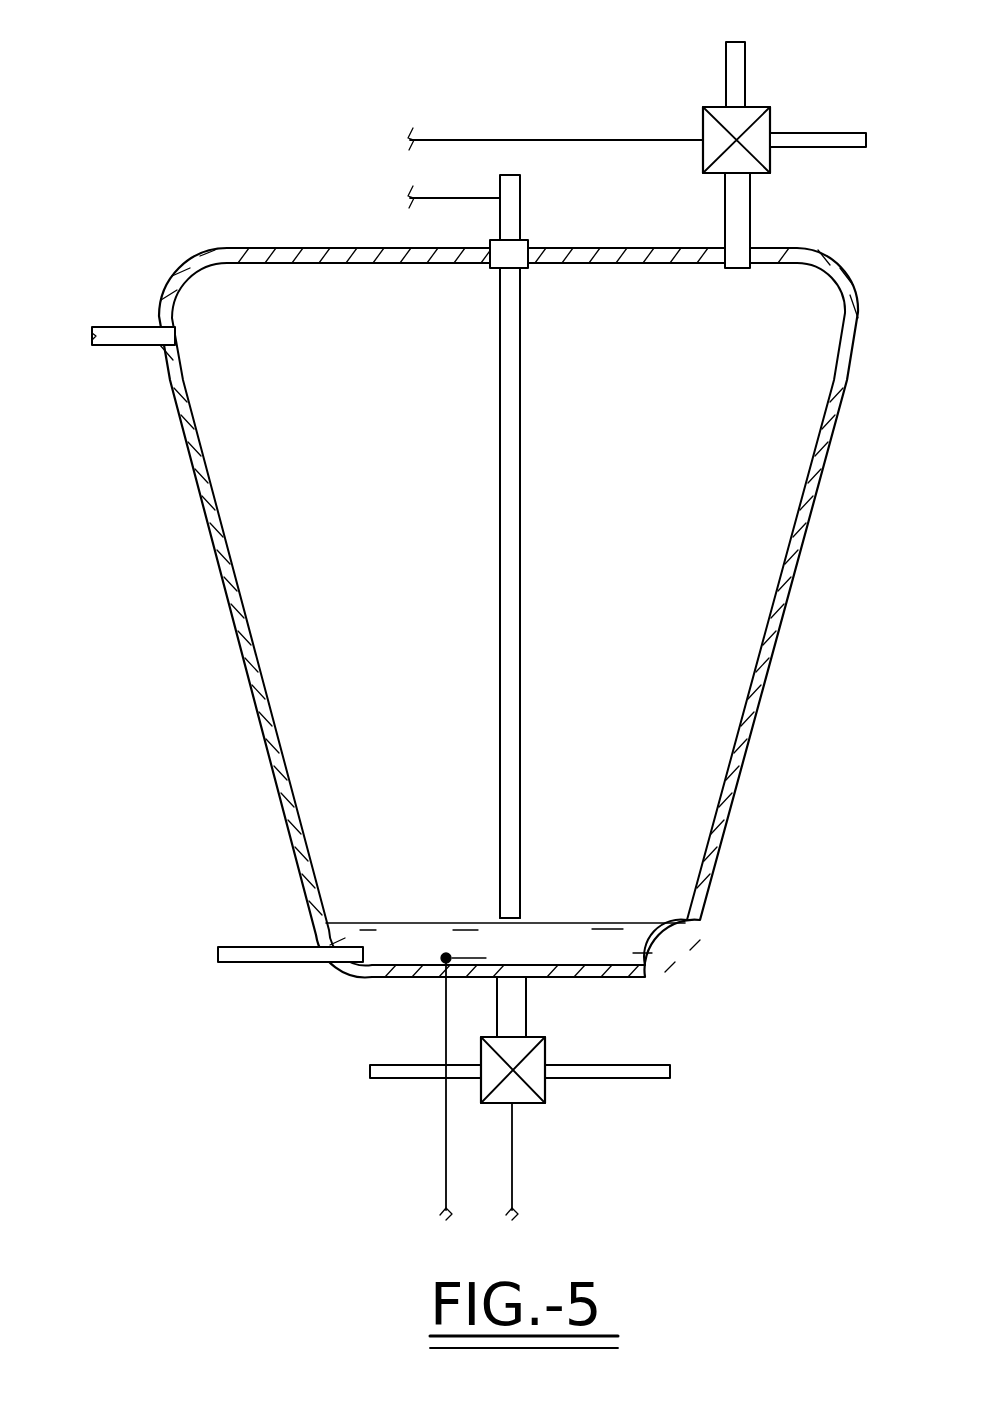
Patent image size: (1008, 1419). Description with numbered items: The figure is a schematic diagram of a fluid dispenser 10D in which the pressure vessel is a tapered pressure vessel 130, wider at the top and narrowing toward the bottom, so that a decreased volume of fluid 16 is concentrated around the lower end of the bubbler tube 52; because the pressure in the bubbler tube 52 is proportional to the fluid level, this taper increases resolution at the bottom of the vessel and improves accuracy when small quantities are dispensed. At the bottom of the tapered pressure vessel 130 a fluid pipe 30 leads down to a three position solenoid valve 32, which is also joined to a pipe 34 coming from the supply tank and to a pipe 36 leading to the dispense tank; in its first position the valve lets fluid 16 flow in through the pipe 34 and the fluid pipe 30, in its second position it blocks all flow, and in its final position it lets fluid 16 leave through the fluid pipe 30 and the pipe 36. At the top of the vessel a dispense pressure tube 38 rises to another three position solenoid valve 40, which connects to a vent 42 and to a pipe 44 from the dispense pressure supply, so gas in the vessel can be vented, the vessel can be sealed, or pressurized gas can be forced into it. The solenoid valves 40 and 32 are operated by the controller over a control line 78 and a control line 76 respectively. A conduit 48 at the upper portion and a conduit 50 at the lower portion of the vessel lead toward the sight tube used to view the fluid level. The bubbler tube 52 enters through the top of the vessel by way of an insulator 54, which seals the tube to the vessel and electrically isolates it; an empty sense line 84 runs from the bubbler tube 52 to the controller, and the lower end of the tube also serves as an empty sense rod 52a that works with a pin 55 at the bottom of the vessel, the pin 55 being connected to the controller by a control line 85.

The fluid dispenser 10D is at (438, 515).
The tapered pressure vessel 130 is at (200, 547).
The fluid 16 is at (598, 923).
The conduit 48 is at (115, 327).
The conduit 50 is at (268, 962).
The control line 78 is at (505, 140).
The empty sense line 84 is at (430, 198).
The bubbler tube 52 is at (520, 190).
The empty sense rod 52a is at (500, 915).
The insulator 54 is at (528, 245).
The dispense pressure tube 38 is at (750, 208).
The solenoid valve 40 is at (703, 115).
The vent 42 is at (726, 65).
The pipe 44 is at (830, 133).
The fluid pipe 30 is at (526, 1015).
The solenoid valve 32 is at (547, 1100).
The pipe 34 is at (405, 1078).
The pipe 36 is at (655, 1078).
The pin 55 is at (441, 963).
The control line 85 is at (446, 1165).
The control line 76 is at (513, 1180).